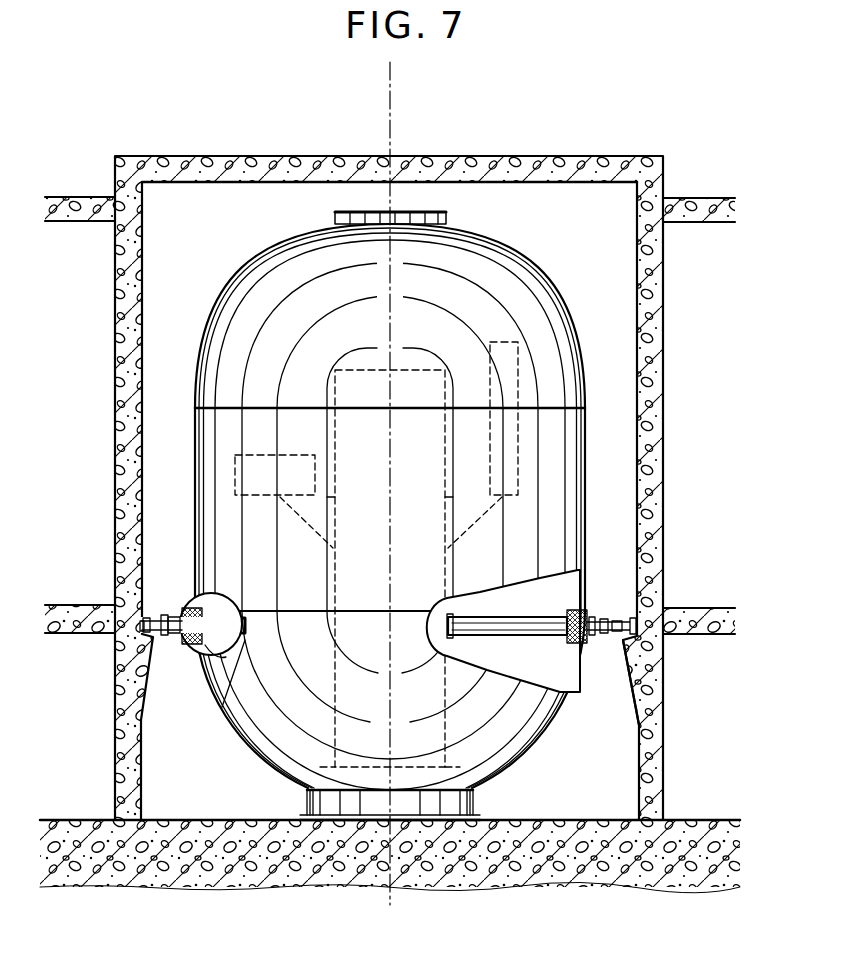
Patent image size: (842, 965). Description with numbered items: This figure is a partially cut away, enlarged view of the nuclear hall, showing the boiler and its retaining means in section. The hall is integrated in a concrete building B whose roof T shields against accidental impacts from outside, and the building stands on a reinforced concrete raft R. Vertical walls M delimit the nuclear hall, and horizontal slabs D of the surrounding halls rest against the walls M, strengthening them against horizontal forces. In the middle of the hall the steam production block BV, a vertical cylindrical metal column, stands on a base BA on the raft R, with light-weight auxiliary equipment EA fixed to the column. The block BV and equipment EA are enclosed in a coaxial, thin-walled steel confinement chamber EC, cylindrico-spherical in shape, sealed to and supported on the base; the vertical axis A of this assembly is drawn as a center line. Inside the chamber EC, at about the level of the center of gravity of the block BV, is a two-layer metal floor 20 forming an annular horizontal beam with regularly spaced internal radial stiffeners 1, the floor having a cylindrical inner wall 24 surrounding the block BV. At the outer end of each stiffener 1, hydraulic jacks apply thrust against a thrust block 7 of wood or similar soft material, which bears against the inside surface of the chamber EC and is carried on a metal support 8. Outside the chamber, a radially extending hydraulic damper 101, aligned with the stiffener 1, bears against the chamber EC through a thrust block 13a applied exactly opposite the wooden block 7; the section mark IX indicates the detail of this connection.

The internal radial stiffener 1 is at (215, 600).
The thrust block 7 is at (208, 642).
The metal support 8 is at (198, 658).
The thrust block 13a is at (190, 612).
The radially extending hydraulic damper 101 is at (186, 614).
The two-layer metal floor 20 is at (245, 628).
The cylindrical inner wall 24 is at (438, 640).
The vertical axis A is at (395, 128).
The roof T is at (487, 156).
The concrete building B is at (612, 156).
The steel confinement chamber EC is at (529, 272).
The auxiliary equipment EA is at (288, 453).
The steam production block BV is at (327, 402).
The horizontal slab D is at (84, 605).
The vertical wall M is at (634, 727).
The raft R is at (193, 820).
The base BA is at (308, 802).
The detail section IX is at (177, 655).